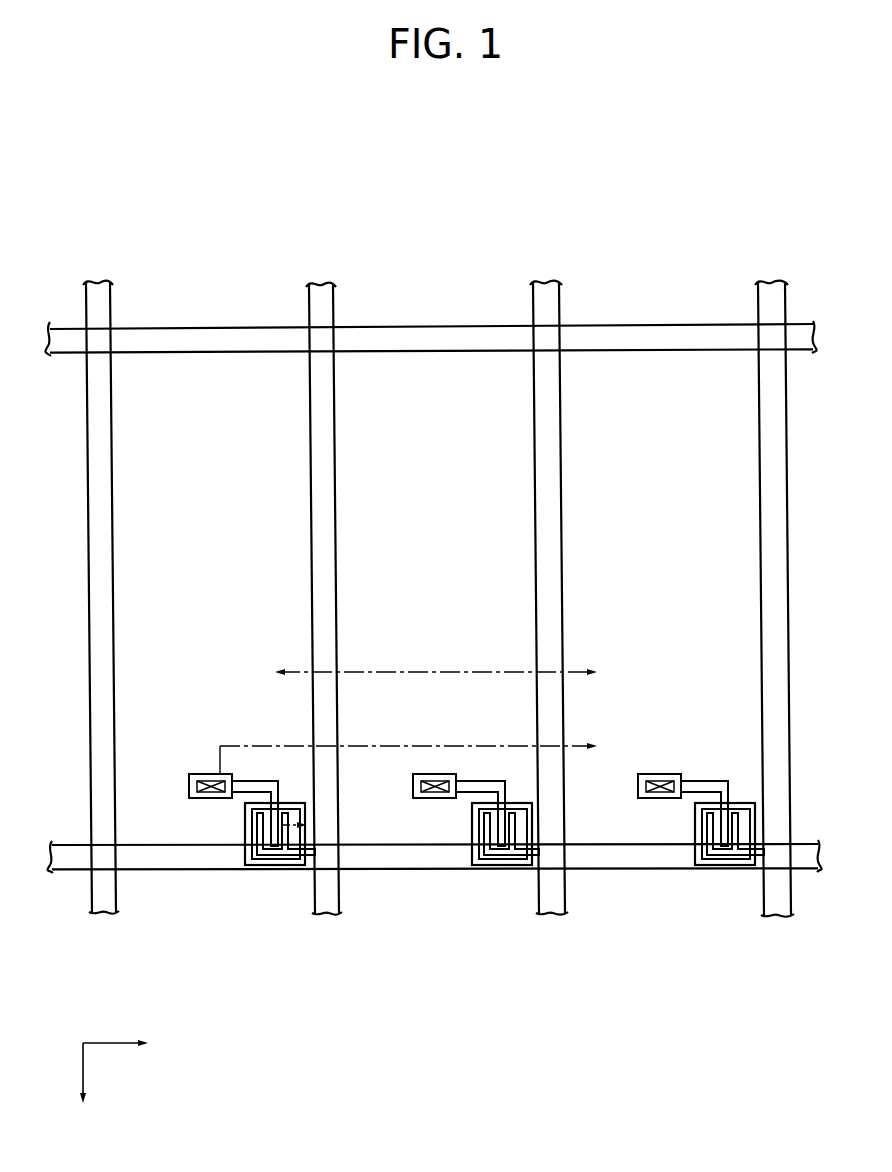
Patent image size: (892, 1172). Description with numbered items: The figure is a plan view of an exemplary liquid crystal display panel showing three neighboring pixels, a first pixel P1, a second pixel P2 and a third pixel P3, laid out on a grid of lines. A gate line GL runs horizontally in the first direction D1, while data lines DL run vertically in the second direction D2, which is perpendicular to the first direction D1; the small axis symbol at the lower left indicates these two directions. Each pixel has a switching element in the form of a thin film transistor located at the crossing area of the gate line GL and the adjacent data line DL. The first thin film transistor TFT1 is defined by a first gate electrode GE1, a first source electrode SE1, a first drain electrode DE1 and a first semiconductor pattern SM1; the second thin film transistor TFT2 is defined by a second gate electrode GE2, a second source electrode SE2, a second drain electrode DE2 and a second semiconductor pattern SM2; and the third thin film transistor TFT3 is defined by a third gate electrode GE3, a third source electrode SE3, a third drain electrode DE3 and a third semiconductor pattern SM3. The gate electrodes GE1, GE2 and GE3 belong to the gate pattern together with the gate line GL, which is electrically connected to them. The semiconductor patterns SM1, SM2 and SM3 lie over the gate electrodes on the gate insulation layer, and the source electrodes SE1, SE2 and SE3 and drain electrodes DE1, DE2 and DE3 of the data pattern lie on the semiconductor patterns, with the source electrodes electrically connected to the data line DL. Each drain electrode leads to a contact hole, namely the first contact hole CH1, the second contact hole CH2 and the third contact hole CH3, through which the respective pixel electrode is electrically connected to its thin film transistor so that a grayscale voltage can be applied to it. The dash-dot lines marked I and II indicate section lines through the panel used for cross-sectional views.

The first pixel P1 is at (152, 238).
The second pixel P2 is at (377, 238).
The third pixel P3 is at (601, 236).
The gate line GL is at (210, 338).
The data line DL is at (322, 285).
The first contact hole CH1 is at (214, 786).
The second contact hole CH2 is at (413, 782).
The third contact hole CH3 is at (638, 780).
The first gate electrode GE1 is at (245, 825).
The first source electrode SE1 is at (274, 846).
The first drain electrode DE1 is at (283, 868).
The first semiconductor pattern SM1 is at (262, 855).
The first thin film transistor TFT1 is at (259, 886).
The second gate electrode GE2 is at (472, 825).
The second source electrode SE2 is at (501, 846).
The second drain electrode DE2 is at (509, 868).
The second semiconductor pattern SM2 is at (489, 855).
The second thin film transistor TFT2 is at (486, 886).
The third gate electrode GE3 is at (695, 825).
The third source electrode SE3 is at (724, 846).
The third drain electrode DE3 is at (733, 868).
The third semiconductor pattern SM3 is at (712, 855).
The third thin film transistor TFT3 is at (709, 886).
The section line I-I' I is at (421, 788).
The section line II-II' II is at (439, 673).
The first direction D1 is at (130, 1043).
The second direction D2 is at (85, 1085).